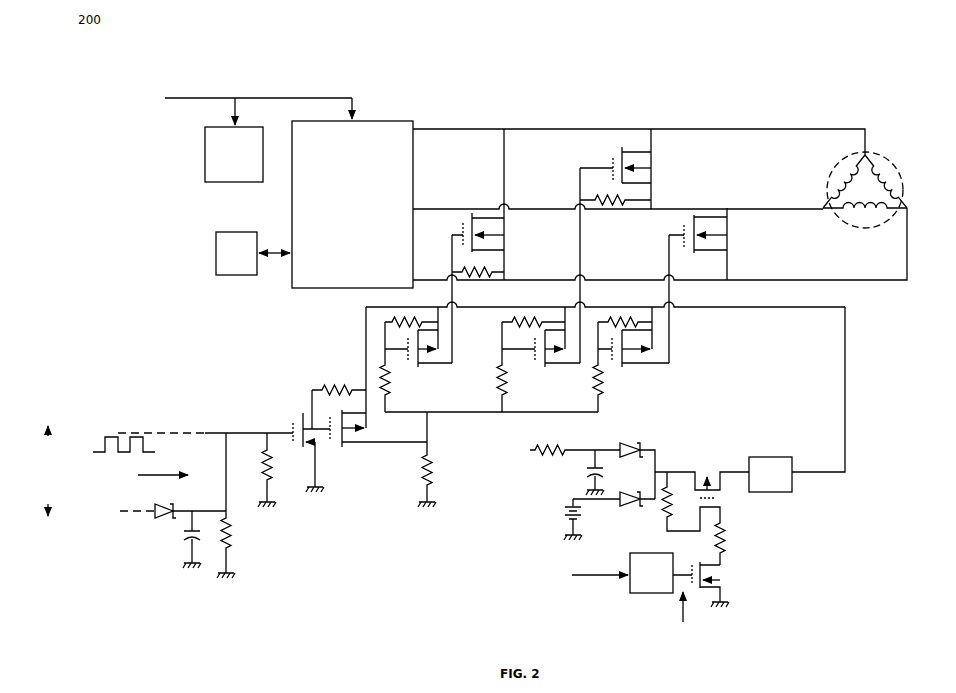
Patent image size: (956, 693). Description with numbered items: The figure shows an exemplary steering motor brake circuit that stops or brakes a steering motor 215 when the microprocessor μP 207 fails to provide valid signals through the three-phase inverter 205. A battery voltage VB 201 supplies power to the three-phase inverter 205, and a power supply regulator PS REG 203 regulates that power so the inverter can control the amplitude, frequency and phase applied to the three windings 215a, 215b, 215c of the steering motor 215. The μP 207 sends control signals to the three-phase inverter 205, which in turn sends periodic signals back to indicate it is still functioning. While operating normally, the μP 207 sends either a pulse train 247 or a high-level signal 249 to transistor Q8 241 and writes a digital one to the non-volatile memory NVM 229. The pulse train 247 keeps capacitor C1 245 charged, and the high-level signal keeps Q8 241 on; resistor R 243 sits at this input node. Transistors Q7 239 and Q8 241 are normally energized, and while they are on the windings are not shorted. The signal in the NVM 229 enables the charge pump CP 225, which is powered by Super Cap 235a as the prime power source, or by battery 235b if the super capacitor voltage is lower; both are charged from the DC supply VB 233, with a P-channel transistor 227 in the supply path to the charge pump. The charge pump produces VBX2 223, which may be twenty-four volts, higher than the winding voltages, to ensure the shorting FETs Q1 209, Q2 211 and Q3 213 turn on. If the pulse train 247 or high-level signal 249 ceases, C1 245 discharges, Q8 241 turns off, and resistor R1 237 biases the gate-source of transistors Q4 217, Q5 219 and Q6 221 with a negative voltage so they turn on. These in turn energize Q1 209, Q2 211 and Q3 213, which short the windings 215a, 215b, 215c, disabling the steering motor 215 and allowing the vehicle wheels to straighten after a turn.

The VB 201 is at (258, 94).
The PS REG 203 is at (234, 156).
The 3ø inverter 205 is at (352, 204).
The μP 207 is at (304, 410).
The transistor Q1 209 is at (612, 169).
The transistor Q2 211 is at (464, 245).
The transistor Q3 213 is at (683, 244).
The steering motor 215 is at (860, 169).
The winding 215a is at (831, 178).
The winding 215b is at (861, 224).
The winding 215c is at (890, 172).
The transistor Q4 217 is at (416, 359).
The transistor Q5 219 is at (538, 359).
The transistor Q6 221 is at (631, 359).
The VBX2 223 is at (835, 389).
The charge pump 225 is at (770, 474).
The P-channel transistor 227 is at (702, 502).
The non-volatile memory 229 is at (650, 596).
The VB 233 is at (581, 462).
The Super Cap 235a is at (584, 472).
The battery 235b is at (566, 520).
The resistor R1 237 is at (440, 459).
The transistor Q7 239 is at (378, 447).
The transistor Q8 241 is at (312, 446).
The resistor R 243 is at (239, 505).
The capacitor C1 245 is at (180, 539).
The pulse train 247 is at (140, 471).
The high-level signal 249 is at (48, 471).